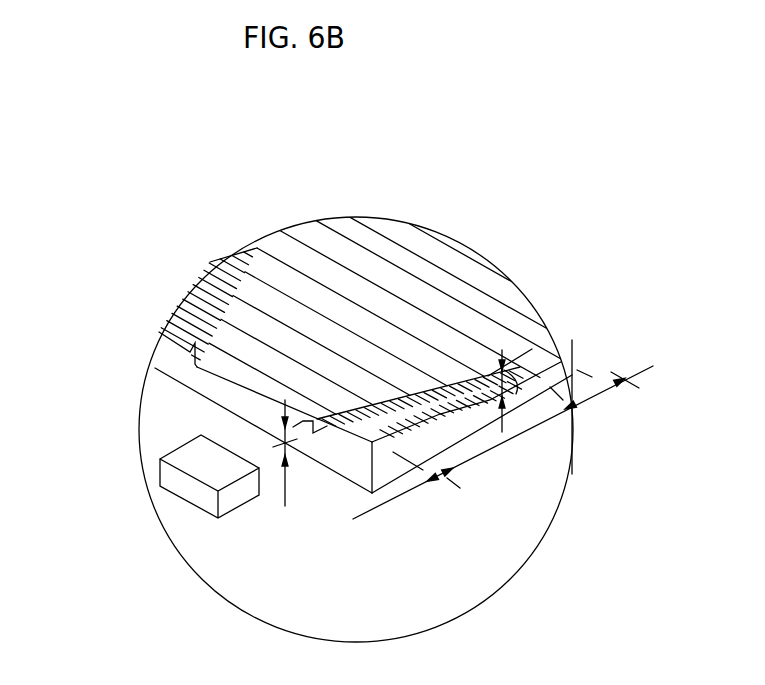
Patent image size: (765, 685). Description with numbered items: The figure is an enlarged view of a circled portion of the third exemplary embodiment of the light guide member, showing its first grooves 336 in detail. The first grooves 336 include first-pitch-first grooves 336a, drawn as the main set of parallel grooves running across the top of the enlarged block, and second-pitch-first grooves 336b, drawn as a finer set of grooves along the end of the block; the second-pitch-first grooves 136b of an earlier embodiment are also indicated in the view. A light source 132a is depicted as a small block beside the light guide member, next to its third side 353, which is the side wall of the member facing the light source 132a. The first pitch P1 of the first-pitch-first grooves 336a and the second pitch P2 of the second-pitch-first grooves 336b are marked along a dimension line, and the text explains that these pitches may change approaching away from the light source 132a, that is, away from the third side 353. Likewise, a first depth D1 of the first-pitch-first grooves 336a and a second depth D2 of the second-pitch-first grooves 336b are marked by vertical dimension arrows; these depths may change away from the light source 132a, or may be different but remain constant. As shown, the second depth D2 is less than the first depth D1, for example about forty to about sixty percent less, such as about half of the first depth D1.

The first grooves 336 is at (302, 133).
The first-pitch-first grooves 336a is at (317, 240).
The second-pitch-first grooves 336b is at (203, 272).
The third side 353 is at (347, 468).
The second-pitch-first grooves 136b is at (562, 432).
The light source 132a is at (160, 468).
The first depth D1 is at (508, 405).
The second depth D2 is at (300, 453).
The first pitch P1 is at (599, 375).
The second pitch P2 is at (503, 444).